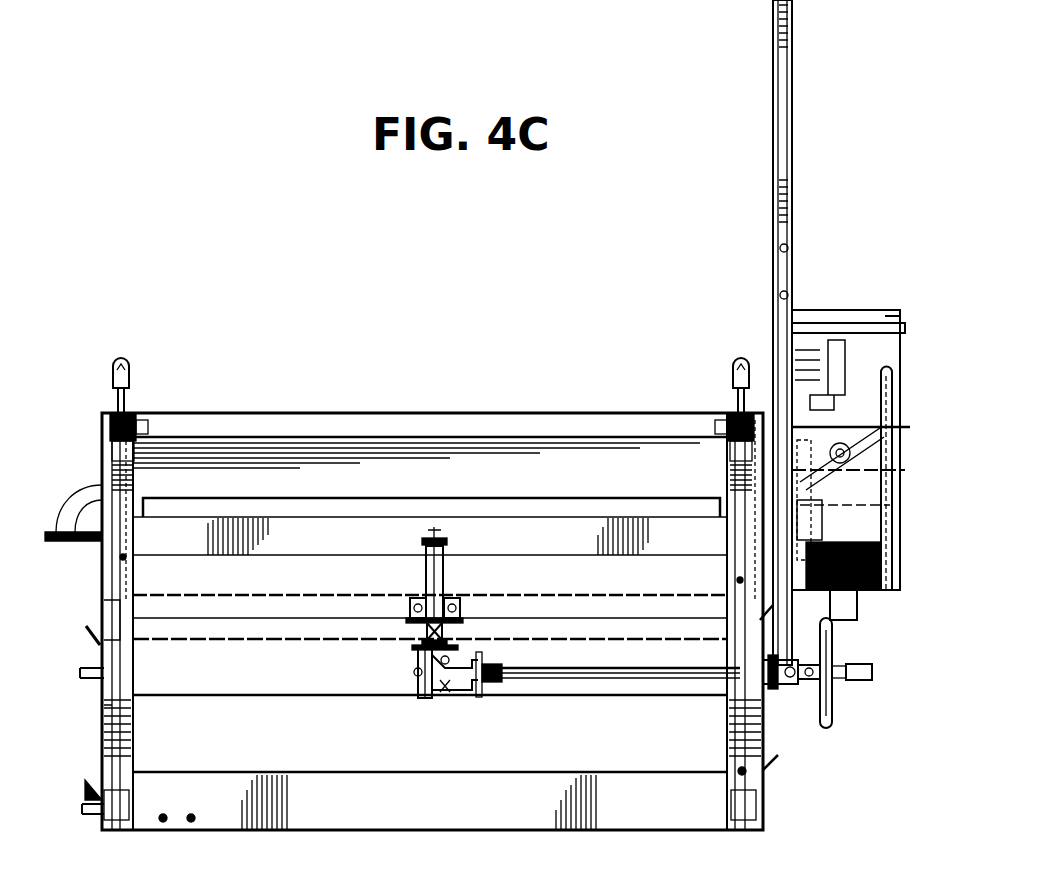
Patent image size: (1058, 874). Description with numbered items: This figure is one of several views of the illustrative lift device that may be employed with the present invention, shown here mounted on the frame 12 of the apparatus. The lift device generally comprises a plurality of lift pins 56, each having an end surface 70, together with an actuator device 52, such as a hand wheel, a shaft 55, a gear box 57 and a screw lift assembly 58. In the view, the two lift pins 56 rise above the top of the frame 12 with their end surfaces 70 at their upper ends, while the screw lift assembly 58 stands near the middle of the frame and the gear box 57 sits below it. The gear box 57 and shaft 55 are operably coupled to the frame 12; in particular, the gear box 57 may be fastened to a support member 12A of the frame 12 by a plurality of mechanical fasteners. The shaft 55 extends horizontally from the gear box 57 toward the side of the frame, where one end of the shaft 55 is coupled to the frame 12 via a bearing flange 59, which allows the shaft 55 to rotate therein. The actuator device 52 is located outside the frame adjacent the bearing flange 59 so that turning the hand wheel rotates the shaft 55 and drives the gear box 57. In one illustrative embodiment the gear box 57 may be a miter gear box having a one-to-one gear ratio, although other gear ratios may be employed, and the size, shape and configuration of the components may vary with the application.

The frame 12 is at (103, 718).
The support member 12A is at (283, 678).
The actuator device 52 is at (838, 710).
The shaft 55 is at (580, 688).
The lift pins 56 is at (130, 400).
The gear box 57 is at (430, 697).
The screw lift assembly 58 is at (443, 570).
The bearing flange 59 is at (795, 690).
The end surfaces 70 is at (122, 362).